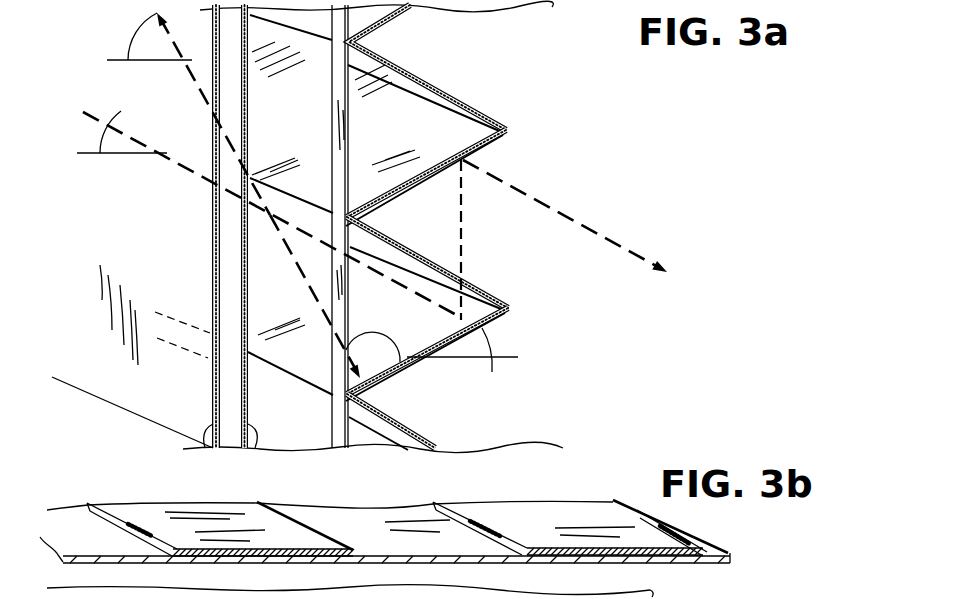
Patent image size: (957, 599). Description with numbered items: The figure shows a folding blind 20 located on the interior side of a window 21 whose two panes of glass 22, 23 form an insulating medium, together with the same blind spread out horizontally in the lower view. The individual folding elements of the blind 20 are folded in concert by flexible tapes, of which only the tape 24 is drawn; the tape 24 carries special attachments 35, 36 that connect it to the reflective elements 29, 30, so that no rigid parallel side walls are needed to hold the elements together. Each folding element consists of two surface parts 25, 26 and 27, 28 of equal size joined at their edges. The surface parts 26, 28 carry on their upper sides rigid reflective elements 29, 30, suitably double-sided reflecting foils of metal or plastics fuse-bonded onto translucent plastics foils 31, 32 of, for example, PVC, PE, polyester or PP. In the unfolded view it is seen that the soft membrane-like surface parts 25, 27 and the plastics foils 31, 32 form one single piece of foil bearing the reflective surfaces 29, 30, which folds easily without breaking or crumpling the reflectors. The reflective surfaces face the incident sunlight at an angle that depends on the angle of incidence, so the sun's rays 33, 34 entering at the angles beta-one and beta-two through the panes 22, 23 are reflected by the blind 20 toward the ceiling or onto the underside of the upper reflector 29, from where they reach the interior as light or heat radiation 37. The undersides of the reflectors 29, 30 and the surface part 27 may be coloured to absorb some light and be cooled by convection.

In FIG. 3a, the folding blind 20 is at (514, 86).
In FIG. 3a, the window 21 is at (230, 452).
In FIG. 3a, the pane of glass 22 is at (212, 430).
In FIG. 3a, the pane of glass 23 is at (248, 430).
In FIG. 3a, the flexible tape 24 is at (333, 90).
In FIG. 3a, the surface part 25 is at (446, 90).
In FIG. 3b, the surface part 25 is at (728, 556).
In FIG. 3a, the surface part 26 is at (451, 179).
In FIG. 3a, the surface part 27 is at (470, 280).
In FIG. 3b, the surface part 27 is at (375, 522).
In FIG. 3a, the surface part 28 is at (460, 354).
In FIG. 3a, the reflective element 29 is at (452, 158).
In FIG. 3b, the reflective element 29 is at (558, 513).
In FIG. 3a, the reflective element 30 is at (428, 343).
In FIG. 3b, the reflective element 30 is at (116, 512).
In FIG. 3a, the translucent plastics foil 31 is at (392, 206).
In FIG. 3b, the translucent plastics foil 31 is at (636, 562).
In FIG. 3a, the translucent plastics foil 32 is at (392, 381).
In FIG. 3b, the translucent plastics foil 32 is at (258, 565).
In FIG. 3a, the sun's ray 33 is at (193, 174).
In FIG. 3a, the sun's ray 34 is at (192, 79).
In FIG. 3a, the attachment 35 is at (368, 197).
In FIG. 3a, the attachment 36 is at (361, 346).
In FIG. 3a, the light or heat radiation 37 is at (614, 243).